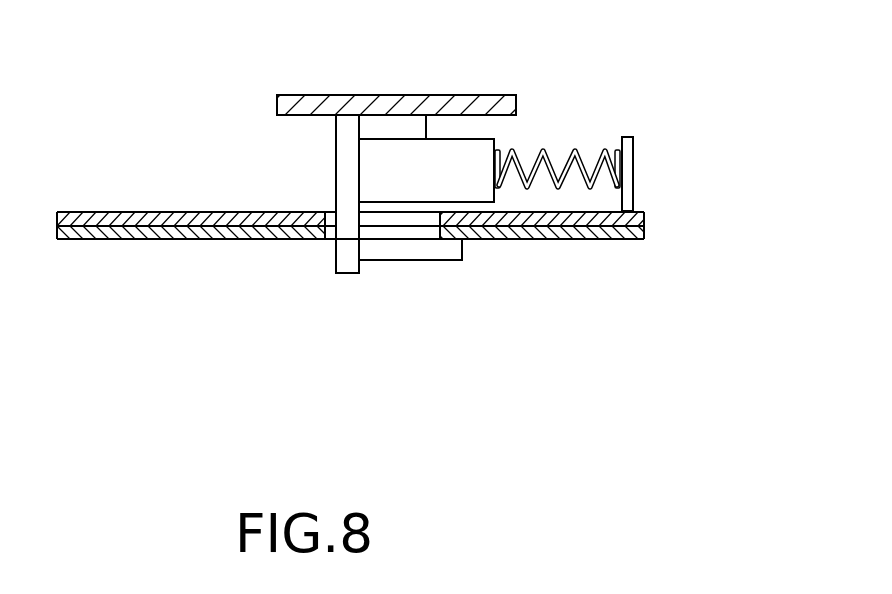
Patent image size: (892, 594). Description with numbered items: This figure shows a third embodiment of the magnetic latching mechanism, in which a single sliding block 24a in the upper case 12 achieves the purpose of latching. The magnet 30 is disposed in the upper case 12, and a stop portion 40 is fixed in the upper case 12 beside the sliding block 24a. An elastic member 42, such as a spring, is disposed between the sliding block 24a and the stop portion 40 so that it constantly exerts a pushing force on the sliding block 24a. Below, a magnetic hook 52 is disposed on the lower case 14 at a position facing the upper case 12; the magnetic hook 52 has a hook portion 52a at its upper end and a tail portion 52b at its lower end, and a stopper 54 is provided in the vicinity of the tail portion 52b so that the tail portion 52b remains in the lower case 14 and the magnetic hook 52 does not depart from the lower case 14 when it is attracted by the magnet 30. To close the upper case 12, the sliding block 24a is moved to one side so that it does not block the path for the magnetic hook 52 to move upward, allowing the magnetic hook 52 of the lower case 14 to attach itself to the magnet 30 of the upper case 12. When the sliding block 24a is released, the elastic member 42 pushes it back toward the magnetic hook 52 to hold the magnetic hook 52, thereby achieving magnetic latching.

The upper case 12 is at (644, 215).
The lower case 14 is at (644, 229).
The sliding block 24a is at (470, 157).
The magnet 30 is at (365, 97).
The stop portion 40 is at (626, 137).
The elastic member 42 is at (568, 153).
The magnetic hook 52 is at (342, 173).
The hook portion 52a is at (410, 127).
The tail portion 52b is at (345, 255).
The stopper 54 is at (433, 255).